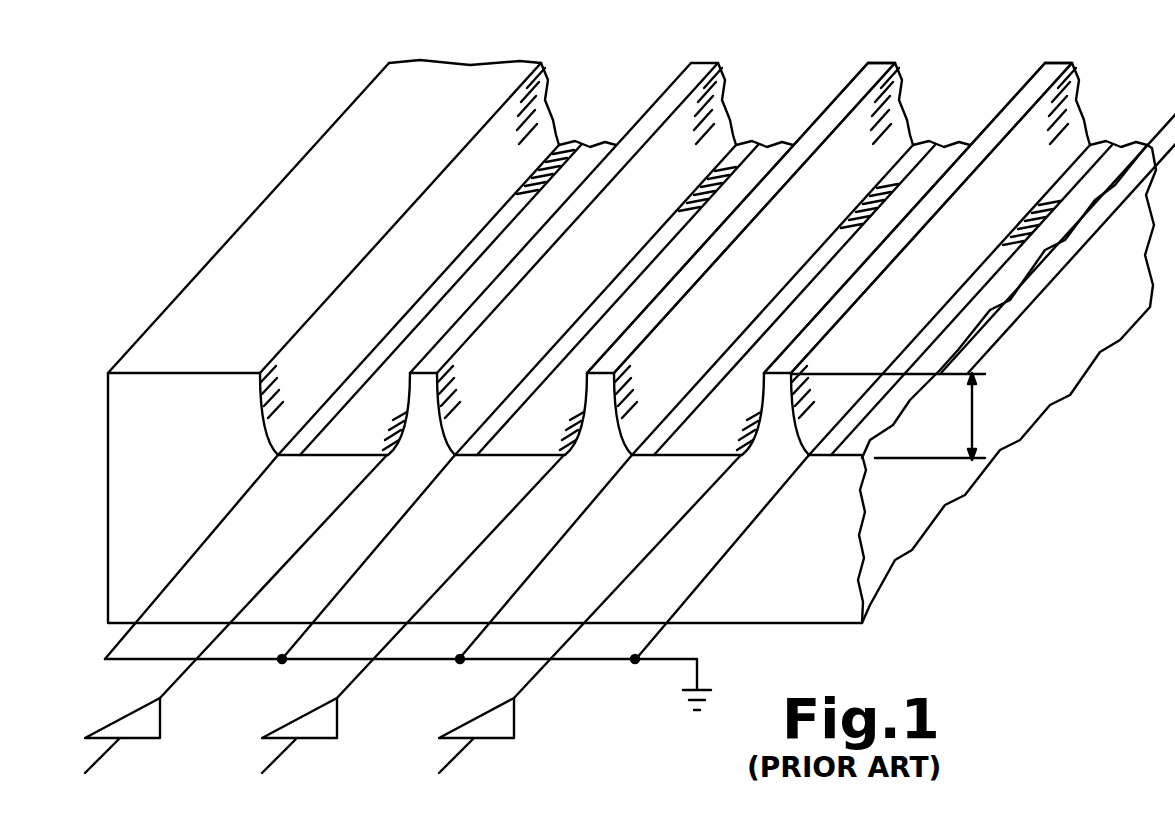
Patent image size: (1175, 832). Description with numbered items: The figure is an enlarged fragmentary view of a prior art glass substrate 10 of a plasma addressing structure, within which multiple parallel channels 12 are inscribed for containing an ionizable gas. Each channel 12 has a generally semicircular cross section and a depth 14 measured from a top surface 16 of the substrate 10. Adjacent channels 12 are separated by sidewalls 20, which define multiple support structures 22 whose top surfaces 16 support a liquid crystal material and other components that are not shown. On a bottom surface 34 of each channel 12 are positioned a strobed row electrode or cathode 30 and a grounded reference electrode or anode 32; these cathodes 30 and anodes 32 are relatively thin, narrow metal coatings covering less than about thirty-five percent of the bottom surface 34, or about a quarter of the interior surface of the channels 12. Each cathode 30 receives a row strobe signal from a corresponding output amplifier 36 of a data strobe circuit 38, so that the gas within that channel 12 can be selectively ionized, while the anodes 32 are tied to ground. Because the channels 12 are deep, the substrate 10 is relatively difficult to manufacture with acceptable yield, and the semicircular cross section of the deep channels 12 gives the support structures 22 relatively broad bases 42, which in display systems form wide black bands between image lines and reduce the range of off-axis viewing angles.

The glass substrate 10 is at (104, 517).
The channel 12 is at (350, 441).
The depth 14 is at (973, 428).
The top surface 16 is at (523, 63).
The sidewall 20 is at (425, 230).
The support structure 22 is at (413, 398).
The cathode 30 is at (367, 443).
The anode 32 is at (297, 437).
The bottom surface 34 is at (343, 428).
The output amplifier 36 is at (150, 721).
The data strobe circuit 38 is at (505, 764).
The base 42 is at (427, 443).